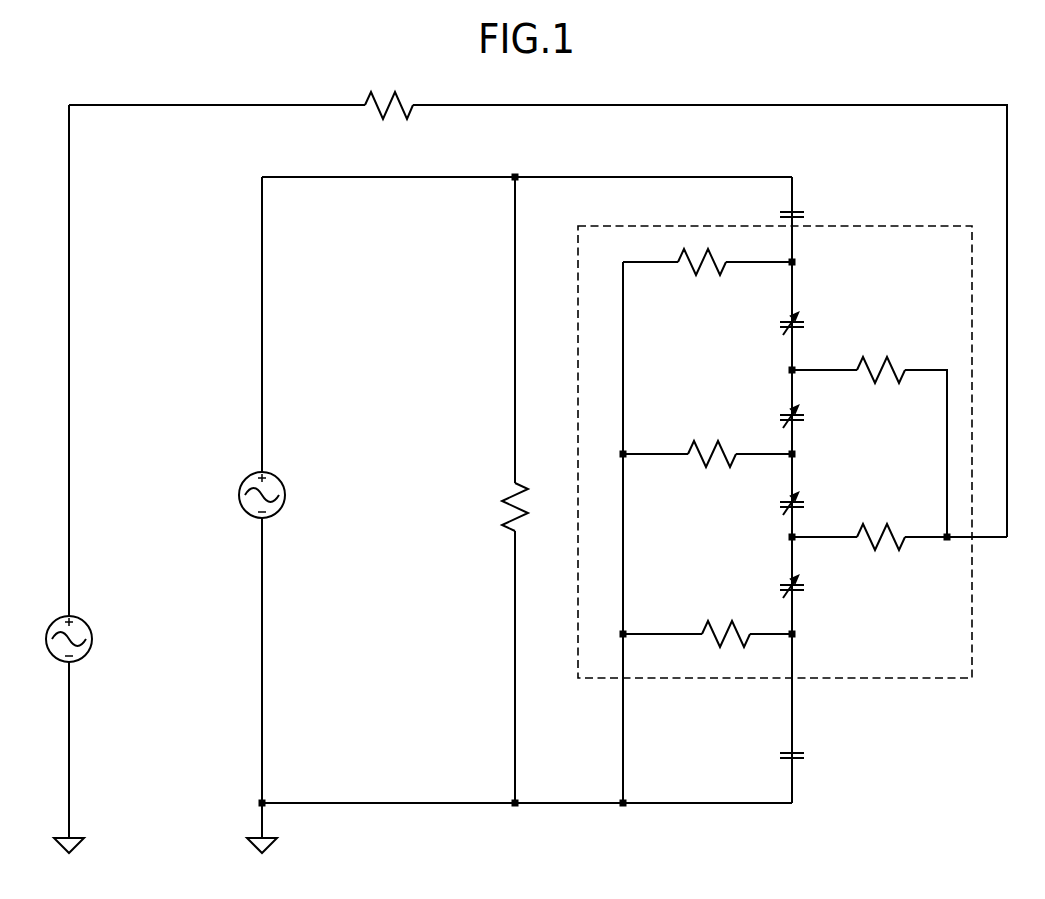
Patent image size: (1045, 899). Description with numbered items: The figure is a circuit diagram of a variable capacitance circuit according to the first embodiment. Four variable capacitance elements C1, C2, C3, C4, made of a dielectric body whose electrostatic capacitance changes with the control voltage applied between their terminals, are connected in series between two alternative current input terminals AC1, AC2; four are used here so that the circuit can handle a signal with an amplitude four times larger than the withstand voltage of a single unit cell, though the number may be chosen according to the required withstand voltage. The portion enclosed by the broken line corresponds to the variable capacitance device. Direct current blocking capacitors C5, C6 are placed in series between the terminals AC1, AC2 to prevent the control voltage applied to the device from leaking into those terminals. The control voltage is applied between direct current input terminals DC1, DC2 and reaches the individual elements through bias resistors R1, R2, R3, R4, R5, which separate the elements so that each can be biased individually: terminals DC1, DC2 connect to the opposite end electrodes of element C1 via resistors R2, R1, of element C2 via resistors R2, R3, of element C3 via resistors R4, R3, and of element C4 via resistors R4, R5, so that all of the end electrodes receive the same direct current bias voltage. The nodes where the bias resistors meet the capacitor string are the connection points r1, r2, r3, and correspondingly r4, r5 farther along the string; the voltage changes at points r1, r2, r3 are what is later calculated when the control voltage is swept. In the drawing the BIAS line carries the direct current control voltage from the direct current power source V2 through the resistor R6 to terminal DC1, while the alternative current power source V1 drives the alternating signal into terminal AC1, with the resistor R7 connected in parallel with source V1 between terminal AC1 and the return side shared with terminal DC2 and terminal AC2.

The bias resistor R1 is at (702, 253).
The bias resistor R2 is at (881, 361).
The bias resistor R3 is at (712, 445).
The bias resistor R4 is at (881, 528).
The bias resistor R5 is at (726, 625).
The resistor R6 is at (389, 96).
The resistor R7 is at (525, 507).
The variable capacitance element C1 is at (799, 314).
The variable capacitance element C2 is at (799, 409).
The variable capacitance element C3 is at (799, 496).
The variable capacitance element C4 is at (799, 578).
The direct current blocking capacitor C5 is at (799, 742).
The direct current blocking capacitor C6 is at (798, 203).
The alternative current power source V1 is at (266, 489).
The direct current power source V2 is at (73, 633).
The connection point r1 is at (769, 253).
The connection point r2 is at (813, 361).
The connection point r3 is at (769, 445).
The node r4 is at (813, 528).
The node r5 is at (774, 625).
The alternative current input terminal AC1 is at (787, 167).
The alternative current input terminal AC2 is at (781, 710).
The direct current input terminal DC1 is at (990, 549).
The direct current input terminal DC2 is at (641, 725).
The bias line BIAS is at (998, 468).